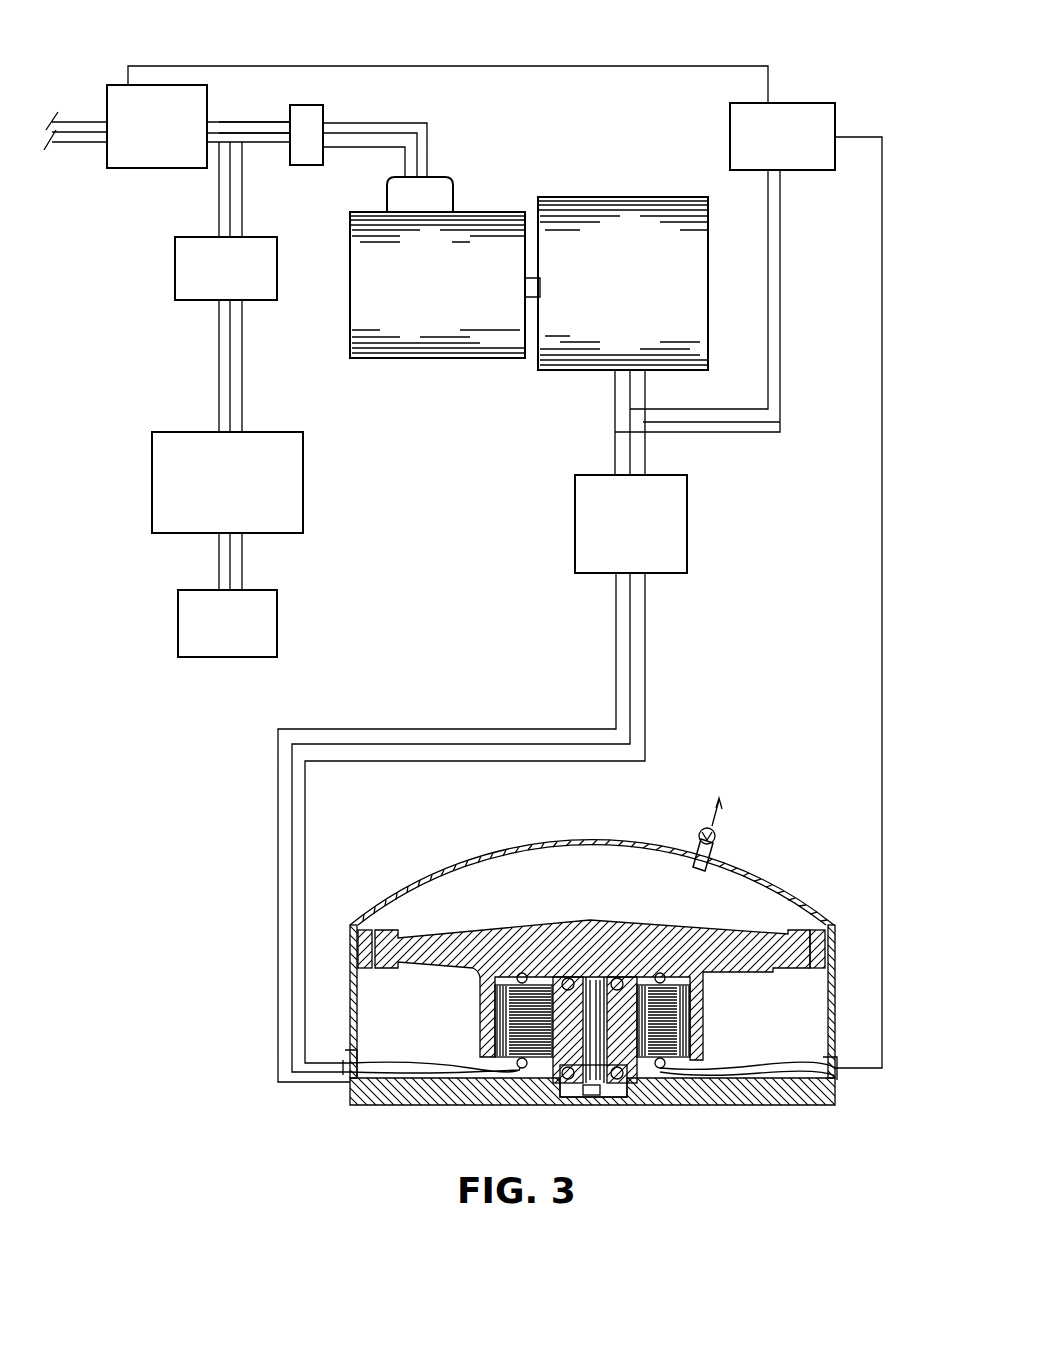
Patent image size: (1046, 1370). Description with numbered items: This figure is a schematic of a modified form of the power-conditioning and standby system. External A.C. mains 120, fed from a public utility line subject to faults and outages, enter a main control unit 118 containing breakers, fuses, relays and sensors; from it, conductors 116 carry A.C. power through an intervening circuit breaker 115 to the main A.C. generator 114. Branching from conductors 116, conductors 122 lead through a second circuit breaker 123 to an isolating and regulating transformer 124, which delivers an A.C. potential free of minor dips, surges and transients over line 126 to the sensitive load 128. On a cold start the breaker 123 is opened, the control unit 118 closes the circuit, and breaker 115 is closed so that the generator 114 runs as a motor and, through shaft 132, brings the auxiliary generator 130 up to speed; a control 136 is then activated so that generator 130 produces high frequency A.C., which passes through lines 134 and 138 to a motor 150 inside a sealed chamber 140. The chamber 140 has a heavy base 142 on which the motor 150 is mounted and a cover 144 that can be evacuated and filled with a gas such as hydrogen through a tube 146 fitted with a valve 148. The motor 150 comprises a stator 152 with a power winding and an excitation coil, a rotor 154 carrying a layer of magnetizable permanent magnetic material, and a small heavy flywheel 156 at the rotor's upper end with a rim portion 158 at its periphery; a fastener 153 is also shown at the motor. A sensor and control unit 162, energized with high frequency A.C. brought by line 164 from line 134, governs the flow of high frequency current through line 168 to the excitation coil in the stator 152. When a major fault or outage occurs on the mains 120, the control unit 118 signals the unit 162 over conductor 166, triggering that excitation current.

The main A.C. generator 114 is at (420, 360).
The circuit breaker 115 is at (312, 165).
The conductors 116 is at (227, 128).
The main control unit 118 is at (145, 172).
The A.C. mains 120 is at (78, 135).
The conductors 122 is at (219, 203).
The circuit breaker 123 is at (175, 275).
The isolating and regulating transformer 124 is at (152, 477).
The line 126 is at (222, 568).
The sensitive load 128 is at (178, 630).
The auxiliary generator 130 is at (600, 197).
The shaft 132 is at (531, 297).
The lines 134 is at (632, 410).
The control 136 is at (575, 515).
The lines 138 is at (616, 645).
The sealed chamber 140 is at (345, 1088).
The heavy base 142 is at (425, 1097).
The cover 144 is at (470, 855).
The tube 146 is at (713, 858).
The valve 148 is at (716, 832).
The motor 150 is at (600, 1093).
The stator 152 is at (525, 1045).
The mounting screw 153 is at (660, 1070).
The rotor 154 is at (703, 1030).
The flywheel 156 is at (552, 935).
The rim portion 158 is at (388, 938).
The sensor and control unit 162 is at (805, 103).
The line 164 is at (772, 287).
The conductor 166 is at (503, 66).
The line 168 is at (882, 570).